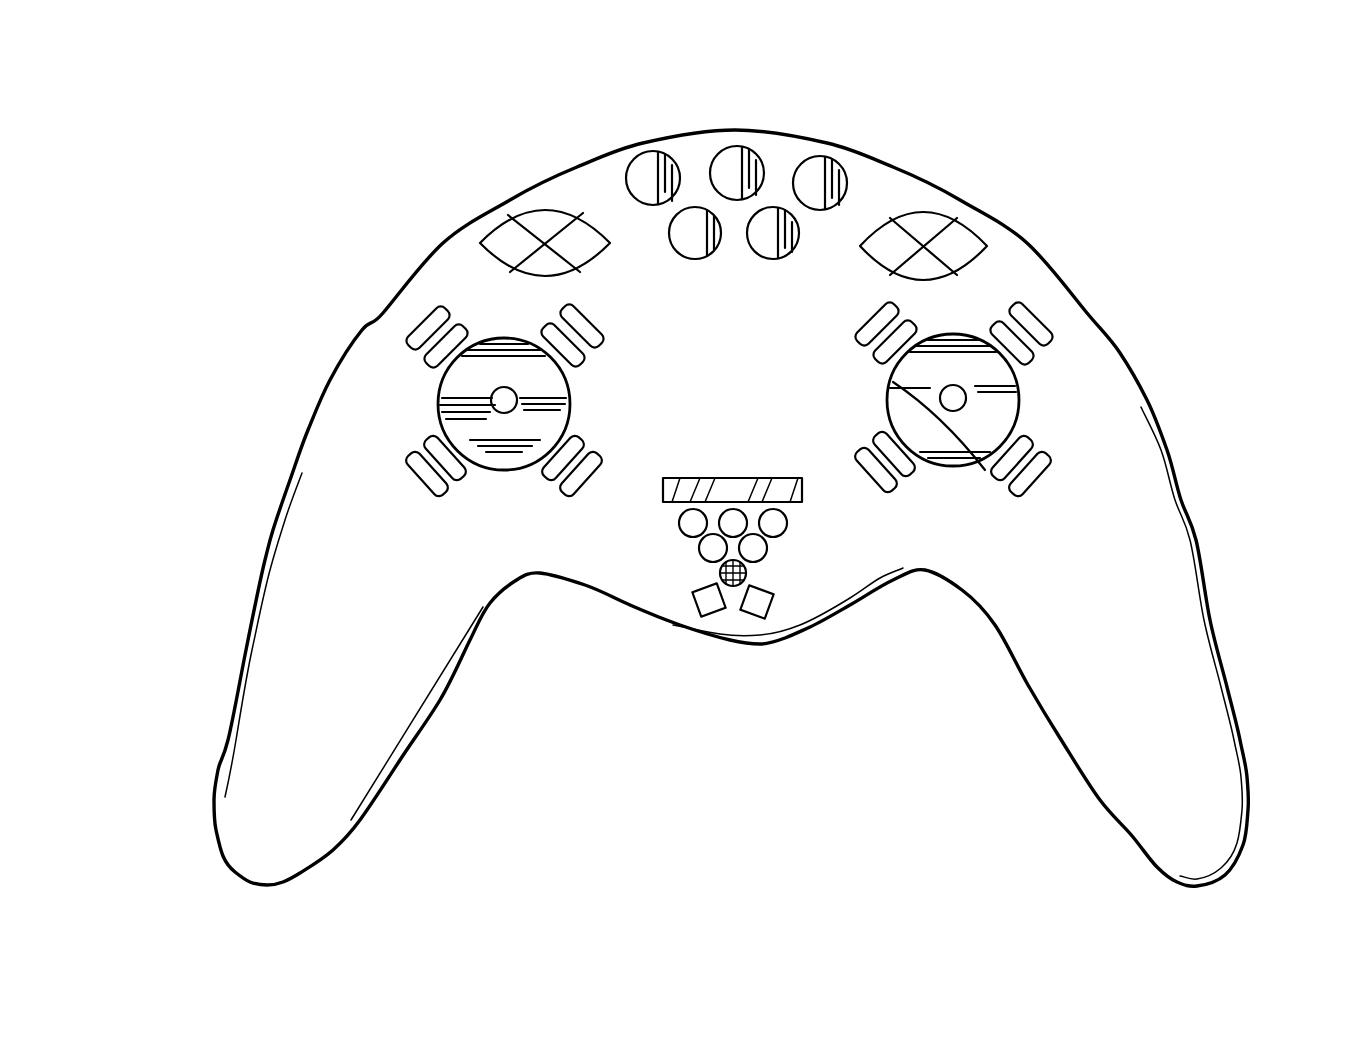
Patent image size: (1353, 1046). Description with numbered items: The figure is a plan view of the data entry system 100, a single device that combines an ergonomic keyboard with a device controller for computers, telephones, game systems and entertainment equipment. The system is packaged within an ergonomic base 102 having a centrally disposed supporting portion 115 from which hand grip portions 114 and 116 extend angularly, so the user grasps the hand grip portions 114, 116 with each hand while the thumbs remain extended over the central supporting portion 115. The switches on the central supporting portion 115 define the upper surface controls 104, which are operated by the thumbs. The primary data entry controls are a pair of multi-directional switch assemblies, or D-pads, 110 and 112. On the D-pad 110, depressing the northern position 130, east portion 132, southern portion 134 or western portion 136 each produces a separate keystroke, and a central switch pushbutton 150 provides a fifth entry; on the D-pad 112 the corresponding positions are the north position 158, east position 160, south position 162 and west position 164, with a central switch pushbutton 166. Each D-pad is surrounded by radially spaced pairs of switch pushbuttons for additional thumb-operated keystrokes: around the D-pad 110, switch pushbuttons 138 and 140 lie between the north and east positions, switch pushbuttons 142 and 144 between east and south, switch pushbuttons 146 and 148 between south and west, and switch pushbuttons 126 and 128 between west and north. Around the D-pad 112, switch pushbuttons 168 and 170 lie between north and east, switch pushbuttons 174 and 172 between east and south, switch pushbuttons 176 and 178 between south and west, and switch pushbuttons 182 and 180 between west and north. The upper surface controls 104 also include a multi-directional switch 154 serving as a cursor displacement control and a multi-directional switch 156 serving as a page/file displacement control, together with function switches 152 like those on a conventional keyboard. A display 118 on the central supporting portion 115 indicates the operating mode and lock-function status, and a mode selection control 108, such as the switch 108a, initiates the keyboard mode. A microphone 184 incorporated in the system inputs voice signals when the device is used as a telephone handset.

The data entry system 100 is at (748, 392).
The ergonomic base 102 is at (1125, 350).
The upper surface controls 104 is at (1072, 216).
The mode selection controls 108 is at (634, 571).
The switch 108a is at (703, 549).
The multi-directional switch assembly 110 is at (455, 400).
The multi-directional switch assembly 112 is at (1020, 388).
The hand grip portion 114 is at (258, 668).
The central supporting portion 115 is at (860, 213).
The hand grip portion 116 is at (1185, 648).
The display 118 is at (783, 485).
The switch pushbutton 126 is at (447, 318).
The switch pushbutton 128 is at (463, 333).
The northern position 130 is at (505, 352).
The east portion 132 is at (545, 400).
The southern portion 134 is at (515, 452).
The western portion 136 is at (450, 385).
The switch pushbutton 138 is at (590, 357).
The switch pushbutton 140 is at (590, 320).
The switch pushbutton 142 is at (600, 447).
The switch pushbutton 144 is at (598, 448).
The switch pushbutton 146 is at (440, 448).
The switch pushbutton 148 is at (407, 460).
The switch pushbutton 150 is at (504, 413).
The function switches 152 is at (807, 120).
The multi-directional switch 154 is at (930, 223).
The multi-directional switch 156 is at (549, 214).
The north position 158 is at (918, 332).
The east position 160 is at (1016, 380).
The south position 162 is at (905, 388).
The west position 164 is at (892, 396).
The switch pushbutton 166 is at (985, 470).
The switch pushbutton 168 is at (1040, 330).
The switch pushbutton 170 is at (1025, 357).
The switch pushbutton 172 is at (1025, 440).
The switch pushbutton 174 is at (1040, 470).
The switch pushbutton 176 is at (905, 472).
The switch pushbutton 178 is at (893, 495).
The switch pushbutton 180 is at (974, 342).
The switch pushbutton 182 is at (885, 320).
The microphone 184 is at (745, 572).